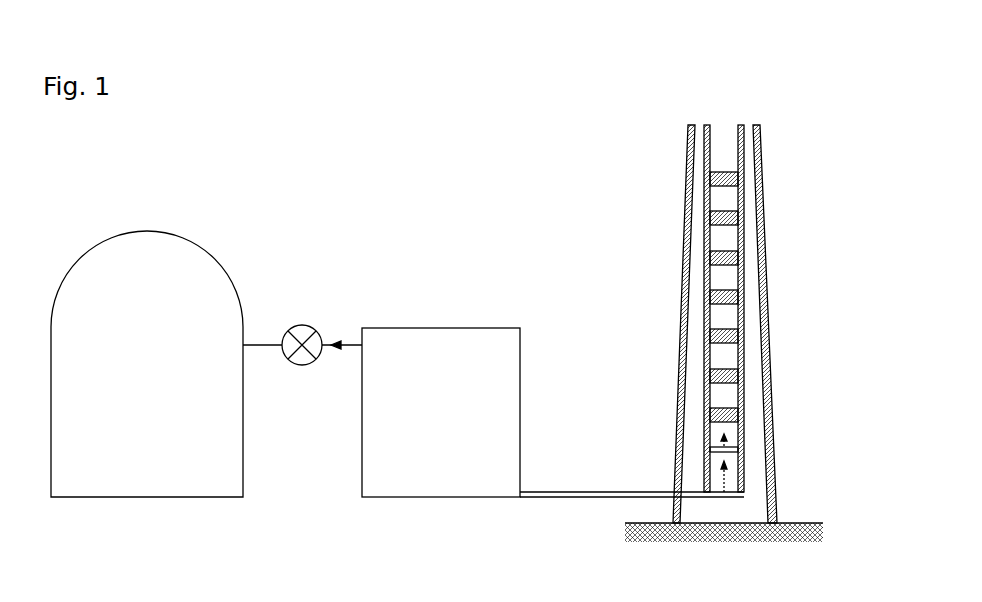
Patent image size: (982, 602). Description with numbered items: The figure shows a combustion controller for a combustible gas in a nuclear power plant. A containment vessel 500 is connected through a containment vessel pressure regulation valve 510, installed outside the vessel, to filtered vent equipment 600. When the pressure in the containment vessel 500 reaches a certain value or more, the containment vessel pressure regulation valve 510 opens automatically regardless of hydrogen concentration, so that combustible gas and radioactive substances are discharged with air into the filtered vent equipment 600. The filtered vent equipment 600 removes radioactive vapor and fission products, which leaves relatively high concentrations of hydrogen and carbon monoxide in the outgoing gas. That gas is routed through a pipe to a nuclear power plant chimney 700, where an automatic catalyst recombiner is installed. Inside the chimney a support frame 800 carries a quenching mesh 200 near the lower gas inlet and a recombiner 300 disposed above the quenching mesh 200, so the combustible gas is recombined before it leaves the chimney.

The containment vessel 500 is at (146, 497).
The containment vessel pressure regulation valve 510 is at (302, 325).
The filtered vent equipment 600 is at (437, 497).
The nuclear power plant chimney 700 is at (781, 183).
The support frame 800 is at (745, 274).
The recombiner 300 is at (745, 372).
The quenching mesh 200 is at (745, 448).